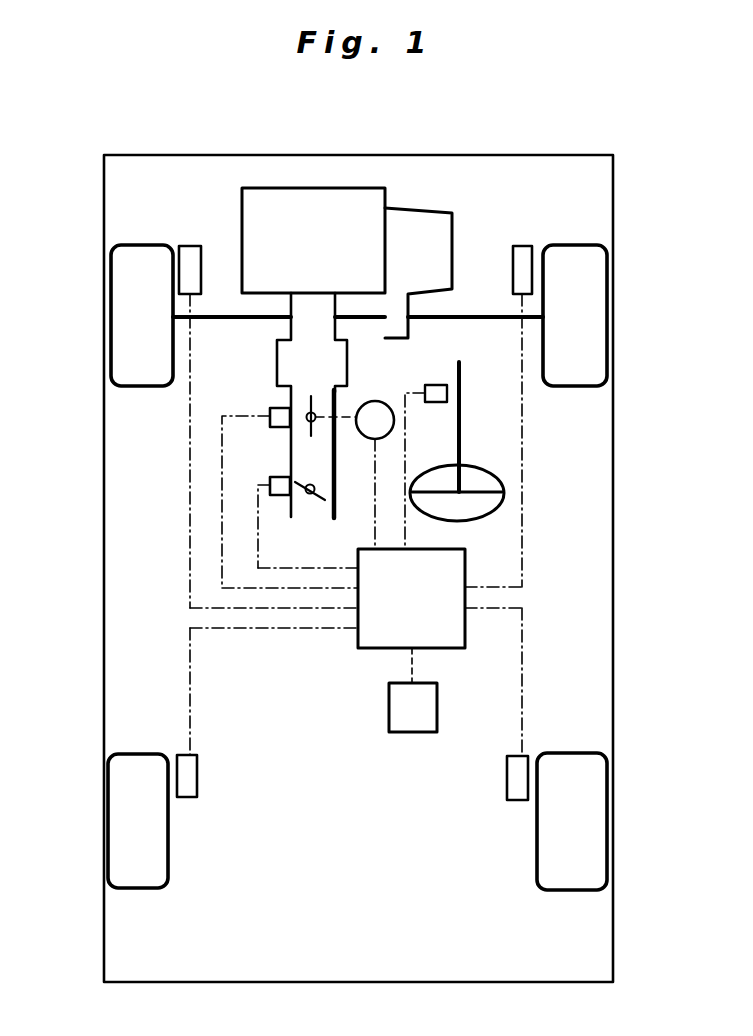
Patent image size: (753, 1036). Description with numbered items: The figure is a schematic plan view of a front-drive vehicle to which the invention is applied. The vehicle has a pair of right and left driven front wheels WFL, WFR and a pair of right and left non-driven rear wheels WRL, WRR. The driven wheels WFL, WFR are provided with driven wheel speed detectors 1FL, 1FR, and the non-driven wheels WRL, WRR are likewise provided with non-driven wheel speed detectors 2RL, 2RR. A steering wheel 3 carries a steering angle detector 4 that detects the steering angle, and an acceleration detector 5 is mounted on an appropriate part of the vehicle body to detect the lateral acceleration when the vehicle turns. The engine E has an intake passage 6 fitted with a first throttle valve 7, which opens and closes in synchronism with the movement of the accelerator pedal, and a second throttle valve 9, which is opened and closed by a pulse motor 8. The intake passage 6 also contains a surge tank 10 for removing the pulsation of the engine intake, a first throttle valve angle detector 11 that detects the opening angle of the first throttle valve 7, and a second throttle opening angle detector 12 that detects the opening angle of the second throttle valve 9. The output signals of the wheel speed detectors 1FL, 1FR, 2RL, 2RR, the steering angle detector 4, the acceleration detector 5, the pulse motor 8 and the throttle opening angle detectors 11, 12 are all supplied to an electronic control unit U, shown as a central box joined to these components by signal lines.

The engine E is at (320, 230).
The electronic control unit U is at (390, 607).
The driven wheel WFL is at (118, 262).
The driven wheel WFR is at (605, 272).
The non-driven wheel WRL is at (108, 808).
The non-driven wheel WRR is at (607, 845).
The driven wheel speed detector 1FL is at (190, 246).
The driven wheel speed detector 1FR is at (522, 246).
The non-driven wheel speed detector 2RL is at (188, 797).
The non-driven wheel speed detector 2RR is at (517, 800).
The steering wheel 3 is at (483, 517).
The steering angle detector 4 is at (436, 385).
The acceleration detector 5 is at (412, 732).
The intake passage 6 is at (335, 450).
The first throttle valve 7 is at (325, 500).
The pulse motor 8 is at (375, 402).
The second throttle valve 9 is at (309, 400).
The surge tank 10 is at (282, 352).
The first throttle valve angle detector 11 is at (262, 485).
The second throttle opening angle detector 12 is at (278, 428).